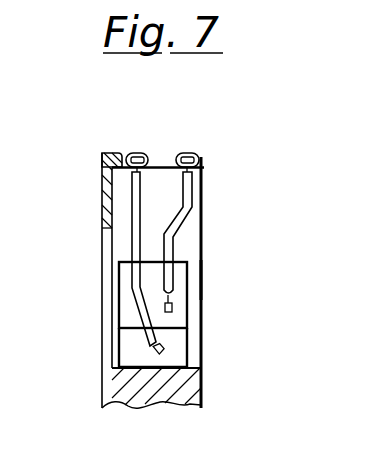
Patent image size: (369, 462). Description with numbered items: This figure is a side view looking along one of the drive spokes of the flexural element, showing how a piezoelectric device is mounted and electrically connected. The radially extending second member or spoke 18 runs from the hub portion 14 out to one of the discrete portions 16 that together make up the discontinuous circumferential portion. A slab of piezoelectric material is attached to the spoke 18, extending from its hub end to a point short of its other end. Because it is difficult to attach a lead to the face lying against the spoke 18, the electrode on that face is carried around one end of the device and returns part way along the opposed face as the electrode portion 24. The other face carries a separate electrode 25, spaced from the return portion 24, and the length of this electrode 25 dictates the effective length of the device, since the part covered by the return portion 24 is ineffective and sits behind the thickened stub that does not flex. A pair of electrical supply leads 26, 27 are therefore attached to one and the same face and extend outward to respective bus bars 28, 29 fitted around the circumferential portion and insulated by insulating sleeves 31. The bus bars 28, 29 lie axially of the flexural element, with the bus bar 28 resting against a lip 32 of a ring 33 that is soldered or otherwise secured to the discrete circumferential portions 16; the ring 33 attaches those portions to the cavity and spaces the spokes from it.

The hub portion 14 is at (193, 388).
The discrete portion 16 is at (203, 210).
The second member or spoke 18 is at (203, 279).
The electrode return portion 24 is at (177, 352).
The electrode 25 is at (178, 310).
The electrical supply lead 26 is at (137, 240).
The electrical supply lead 27 is at (173, 243).
The bus bar 28 is at (137, 152).
The bus bar 29 is at (191, 152).
The insulating sleeve 31 is at (167, 164).
The lip 32 is at (113, 151).
The ring 33 is at (102, 171).